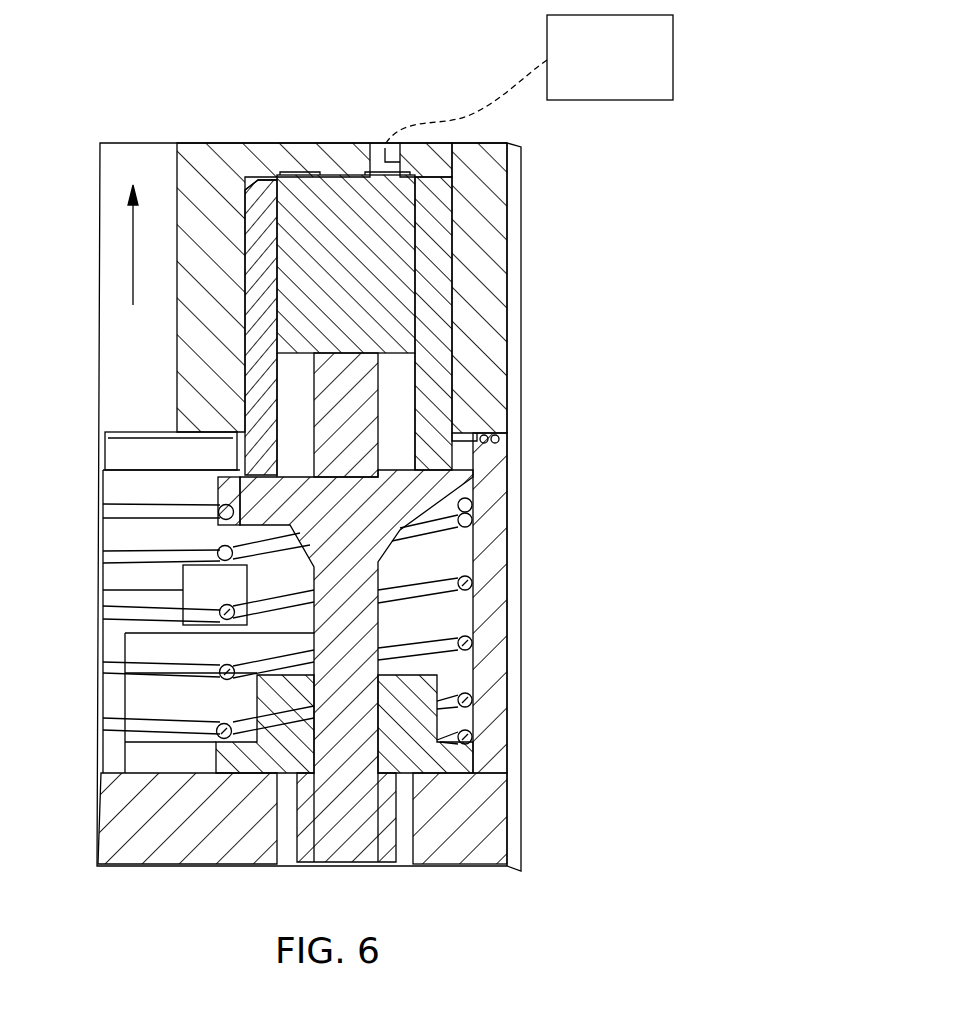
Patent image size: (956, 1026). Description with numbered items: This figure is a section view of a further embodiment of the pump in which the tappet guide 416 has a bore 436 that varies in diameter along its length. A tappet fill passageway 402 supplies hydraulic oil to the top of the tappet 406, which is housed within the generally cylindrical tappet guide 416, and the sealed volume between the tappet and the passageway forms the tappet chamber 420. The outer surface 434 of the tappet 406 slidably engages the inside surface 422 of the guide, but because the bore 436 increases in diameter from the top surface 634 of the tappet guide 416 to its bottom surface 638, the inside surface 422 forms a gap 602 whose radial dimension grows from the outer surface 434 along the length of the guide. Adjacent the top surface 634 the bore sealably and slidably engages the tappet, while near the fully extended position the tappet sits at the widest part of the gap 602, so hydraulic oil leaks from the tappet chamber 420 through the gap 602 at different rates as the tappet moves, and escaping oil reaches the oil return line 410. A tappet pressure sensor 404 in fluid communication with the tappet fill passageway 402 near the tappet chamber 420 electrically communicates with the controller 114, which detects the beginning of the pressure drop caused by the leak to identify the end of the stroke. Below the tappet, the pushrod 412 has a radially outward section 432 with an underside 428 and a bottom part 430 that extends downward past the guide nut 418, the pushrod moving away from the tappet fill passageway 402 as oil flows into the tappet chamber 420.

The controller 114 is at (675, 58).
The tappet fill passageway 402 is at (383, 143).
The tappet pressure sensor 404 is at (398, 152).
The tappet 406 is at (480, 215).
The oil return line 410 is at (100, 252).
The pushrod 412 is at (440, 493).
The tappet guide 416 is at (450, 303).
The guide nut 418 is at (410, 720).
The tappet chamber 420 is at (300, 176).
The inside surface 422 is at (140, 433).
The underside 428 is at (183, 577).
The bottom part 430 is at (345, 845).
The radially outward section 432 is at (290, 525).
The outer surface 434 is at (243, 313).
The bore 436 is at (450, 397).
The gap 602 is at (270, 360).
The top surface 634 is at (253, 180).
The bottom surface 638 is at (218, 488).